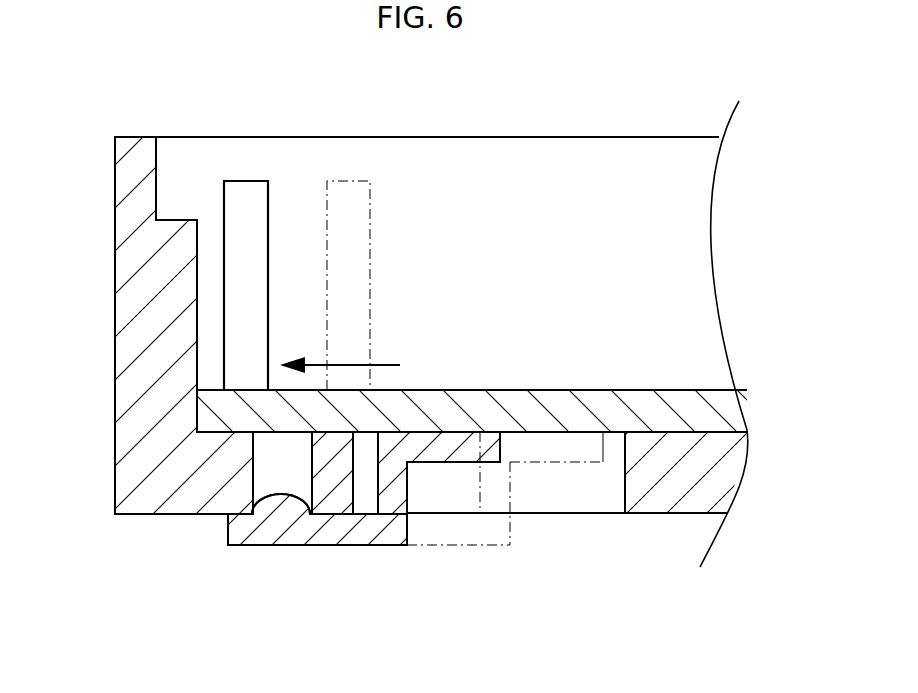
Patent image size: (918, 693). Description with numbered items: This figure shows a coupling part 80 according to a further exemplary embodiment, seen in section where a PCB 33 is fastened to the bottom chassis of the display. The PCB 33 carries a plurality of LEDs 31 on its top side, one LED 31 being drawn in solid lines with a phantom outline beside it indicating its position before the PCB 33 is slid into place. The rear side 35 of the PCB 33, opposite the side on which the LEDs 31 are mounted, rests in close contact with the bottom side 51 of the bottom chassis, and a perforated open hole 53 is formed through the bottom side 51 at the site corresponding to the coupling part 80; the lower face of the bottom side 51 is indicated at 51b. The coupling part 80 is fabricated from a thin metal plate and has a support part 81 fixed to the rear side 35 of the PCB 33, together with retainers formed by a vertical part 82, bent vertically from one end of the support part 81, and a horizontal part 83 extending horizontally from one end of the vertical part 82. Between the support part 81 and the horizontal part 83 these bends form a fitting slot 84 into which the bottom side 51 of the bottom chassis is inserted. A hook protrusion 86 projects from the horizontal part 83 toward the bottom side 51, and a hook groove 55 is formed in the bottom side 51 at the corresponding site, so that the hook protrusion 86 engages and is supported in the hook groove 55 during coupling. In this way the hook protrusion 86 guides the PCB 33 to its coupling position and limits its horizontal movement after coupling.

The LED 31 is at (245, 196).
The PCB 33 is at (717, 407).
The rear side of the PCB 35 is at (575, 432).
The bottom side of the bottom chassis 51 is at (718, 471).
The bottom surface 51b is at (662, 518).
The perforated open hole 53 is at (626, 487).
The hook groove 55 is at (253, 467).
The coupling part 80 is at (385, 545).
The support part 81 is at (493, 462).
The vertical part 82 is at (403, 487).
The horizontal part 83 is at (315, 538).
The fitting slot 84 is at (370, 476).
The hook protrusion 86 is at (283, 495).